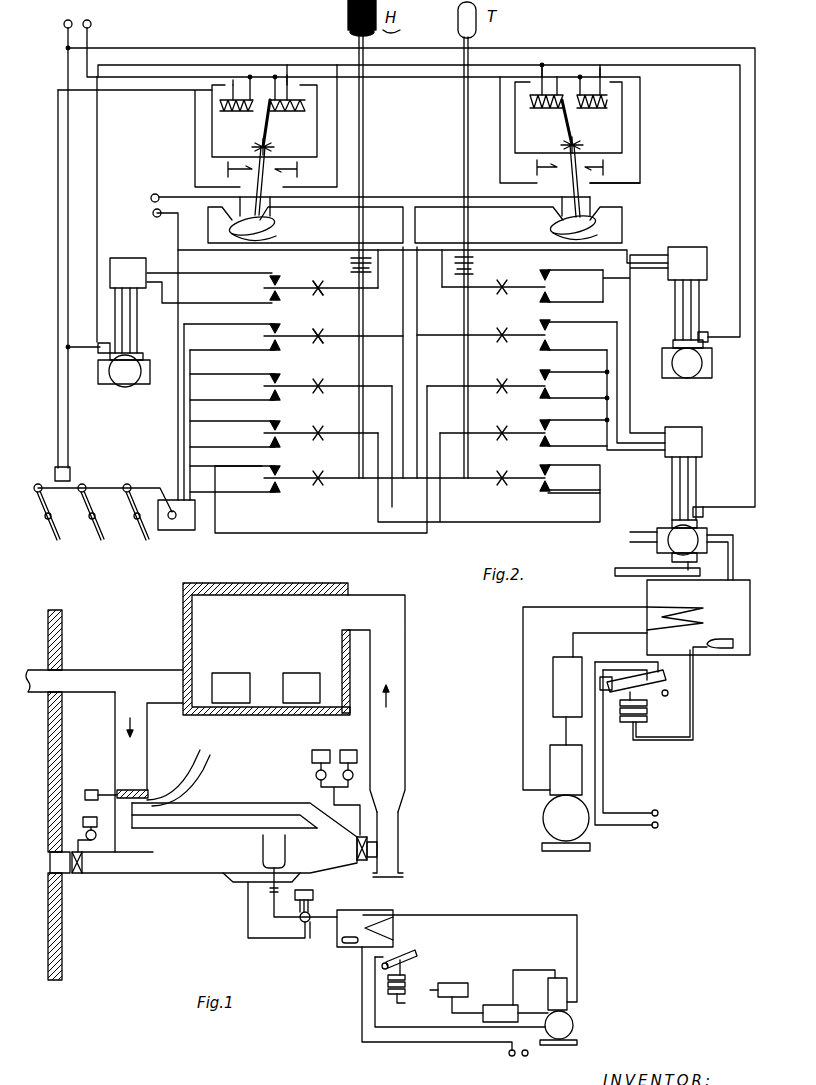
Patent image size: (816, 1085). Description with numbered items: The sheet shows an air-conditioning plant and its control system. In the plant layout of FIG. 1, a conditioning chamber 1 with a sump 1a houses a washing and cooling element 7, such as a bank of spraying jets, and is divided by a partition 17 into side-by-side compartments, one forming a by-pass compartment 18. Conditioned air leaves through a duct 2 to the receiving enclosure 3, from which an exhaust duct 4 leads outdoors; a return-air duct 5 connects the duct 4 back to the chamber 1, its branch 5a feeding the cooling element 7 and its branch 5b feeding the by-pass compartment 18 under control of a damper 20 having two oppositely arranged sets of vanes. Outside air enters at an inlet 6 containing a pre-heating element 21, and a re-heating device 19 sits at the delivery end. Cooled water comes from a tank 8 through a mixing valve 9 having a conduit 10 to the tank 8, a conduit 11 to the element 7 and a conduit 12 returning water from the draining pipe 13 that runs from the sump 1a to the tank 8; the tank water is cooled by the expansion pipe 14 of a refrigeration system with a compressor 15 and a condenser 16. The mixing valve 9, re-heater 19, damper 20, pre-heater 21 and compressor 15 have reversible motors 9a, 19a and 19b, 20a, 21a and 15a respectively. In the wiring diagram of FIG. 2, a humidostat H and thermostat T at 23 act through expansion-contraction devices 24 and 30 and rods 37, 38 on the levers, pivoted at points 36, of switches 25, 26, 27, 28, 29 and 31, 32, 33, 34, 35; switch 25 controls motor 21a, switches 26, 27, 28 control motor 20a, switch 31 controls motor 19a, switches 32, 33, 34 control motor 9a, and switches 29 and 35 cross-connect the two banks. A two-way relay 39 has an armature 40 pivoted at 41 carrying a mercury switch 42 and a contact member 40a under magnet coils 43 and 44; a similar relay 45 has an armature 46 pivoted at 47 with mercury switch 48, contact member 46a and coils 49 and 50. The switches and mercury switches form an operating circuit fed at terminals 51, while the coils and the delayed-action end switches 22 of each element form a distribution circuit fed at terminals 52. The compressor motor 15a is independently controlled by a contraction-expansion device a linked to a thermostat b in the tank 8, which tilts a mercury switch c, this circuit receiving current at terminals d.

In FIG. 1, the conditioning chamber 1 is at (219, 838).
In FIG. 1, the sump 1a is at (240, 884).
In FIG. 1, the duct 2 is at (398, 745).
In FIG. 1, the receiving enclosure 3 is at (266, 649).
In FIG. 1, the exhaust duct 4 is at (102, 678).
In FIG. 1, the return-air duct 5 is at (140, 742).
In FIG. 1, the branch of the return-air duct 5a is at (181, 775).
In FIG. 1, the branch of the return-air duct 5b is at (181, 767).
In FIG. 1, the inlet 6 is at (50, 863).
In FIG. 1, the washing and cooling element 7 is at (276, 849).
In FIG. 2, the tank 8 is at (650, 595).
In FIG. 1, the tank 8 is at (391, 909).
In FIG. 2, the mixing valve 9 is at (700, 535).
In FIG. 1, the mixing valve 9 is at (302, 924).
In FIG. 2, the motor 9a is at (688, 427).
In FIG. 1, the motor 9a is at (313, 893).
In FIG. 1, the conduit 10 is at (328, 912).
In FIG. 1, the conduit 11 is at (283, 895).
In FIG. 1, the conduit 12 is at (311, 936).
In FIG. 1, the draining pipe 13 is at (248, 938).
In FIG. 2, the expansion pipe 14 is at (703, 620).
In FIG. 1, the expansion pipe 14 is at (402, 925).
In FIG. 2, the compressor 15 is at (585, 771).
In FIG. 1, the compressor 15 is at (566, 990).
In FIG. 2, the motor 15a is at (544, 822).
In FIG. 1, the motor 15a is at (575, 1020).
In FIG. 2, the condenser 16 is at (552, 690).
In FIG. 1, the condenser 16 is at (498, 1005).
In FIG. 1, the partition 17 is at (225, 822).
In FIG. 1, the by-pass compartment 18 is at (271, 804).
In FIG. 2, the re-heating device 19 is at (697, 360).
In FIG. 1, the re-heating device 19 is at (380, 850).
In FIG. 2, the motor 19a is at (688, 256).
In FIG. 1, the motor 19a is at (318, 751).
In FIG. 1, the motor 19b is at (347, 750).
In FIG. 2, the damper 20 is at (93, 541).
In FIG. 1, the damper 20 is at (137, 788).
In FIG. 2, the motor 20a is at (173, 532).
In FIG. 1, the motor 20a is at (91, 789).
In FIG. 2, the pre-heating element 21 is at (128, 380).
In FIG. 1, the pre-heating element 21 is at (77, 874).
In FIG. 2, the motor 21a is at (132, 265).
In FIG. 1, the motor 21a is at (83, 822).
In FIG. 2, the end-switch 22 is at (98, 345).
In FIG. 2, the air-condition-responsive devices 23 is at (455, 27).
In FIG. 2, the expansion-contraction device 24 is at (352, 266).
In FIG. 2, the switch 25 is at (321, 286).
In FIG. 2, the switch 26 is at (293, 335).
In FIG. 2, the switch 27 is at (291, 385).
In FIG. 2, the switch 28 is at (284, 432).
In FIG. 2, the switch 29 is at (367, 477).
In FIG. 2, the expansion-contraction device 30 is at (470, 255).
In FIG. 2, the switch 31 is at (522, 284).
In FIG. 2, the switch 32 is at (517, 334).
In FIG. 2, the switch 33 is at (517, 381).
In FIG. 2, the switch 34 is at (523, 427).
In FIG. 2, the switch 35 is at (548, 472).
In FIG. 2, the pivot points 36 is at (322, 292).
In FIG. 2, the rod 37 is at (364, 368).
In FIG. 2, the rod 38 is at (463, 322).
In FIG. 2, the two-way relay 39 is at (197, 128).
In FIG. 2, the armature 40 is at (268, 133).
In FIG. 2, the contact member 40a is at (280, 158).
In FIG. 2, the pivot 41 is at (262, 140).
In FIG. 2, the mercury switch 42 is at (283, 232).
In FIG. 2, the magnet coil 43 is at (236, 88).
In FIG. 2, the magnet coil 44 is at (287, 88).
In FIG. 2, the two-way relay 45 is at (623, 143).
In FIG. 2, the armature 46 is at (558, 133).
In FIG. 2, the contact member 46a is at (580, 163).
In FIG. 2, the pivot 47 is at (592, 99).
In FIG. 2, the mercury switch 48 is at (605, 224).
In FIG. 2, the magnet coil 49 is at (542, 80).
In FIG. 2, the magnet coil 50 is at (593, 87).
In FIG. 2, the terminals 51 is at (152, 210).
In FIG. 2, the terminals 52 is at (91, 28).
In FIG. 1, the contraction-expansion device a is at (405, 1003).
In FIG. 2, the thermostat b is at (722, 649).
In FIG. 1, the thermostat b is at (350, 948).
In FIG. 2, the tiltable mercury switch c is at (660, 686).
In FIG. 1, the tiltable mercury switch c is at (417, 958).
In FIG. 2, the terminals d is at (649, 712).
In FIG. 1, the terminals d is at (518, 1057).